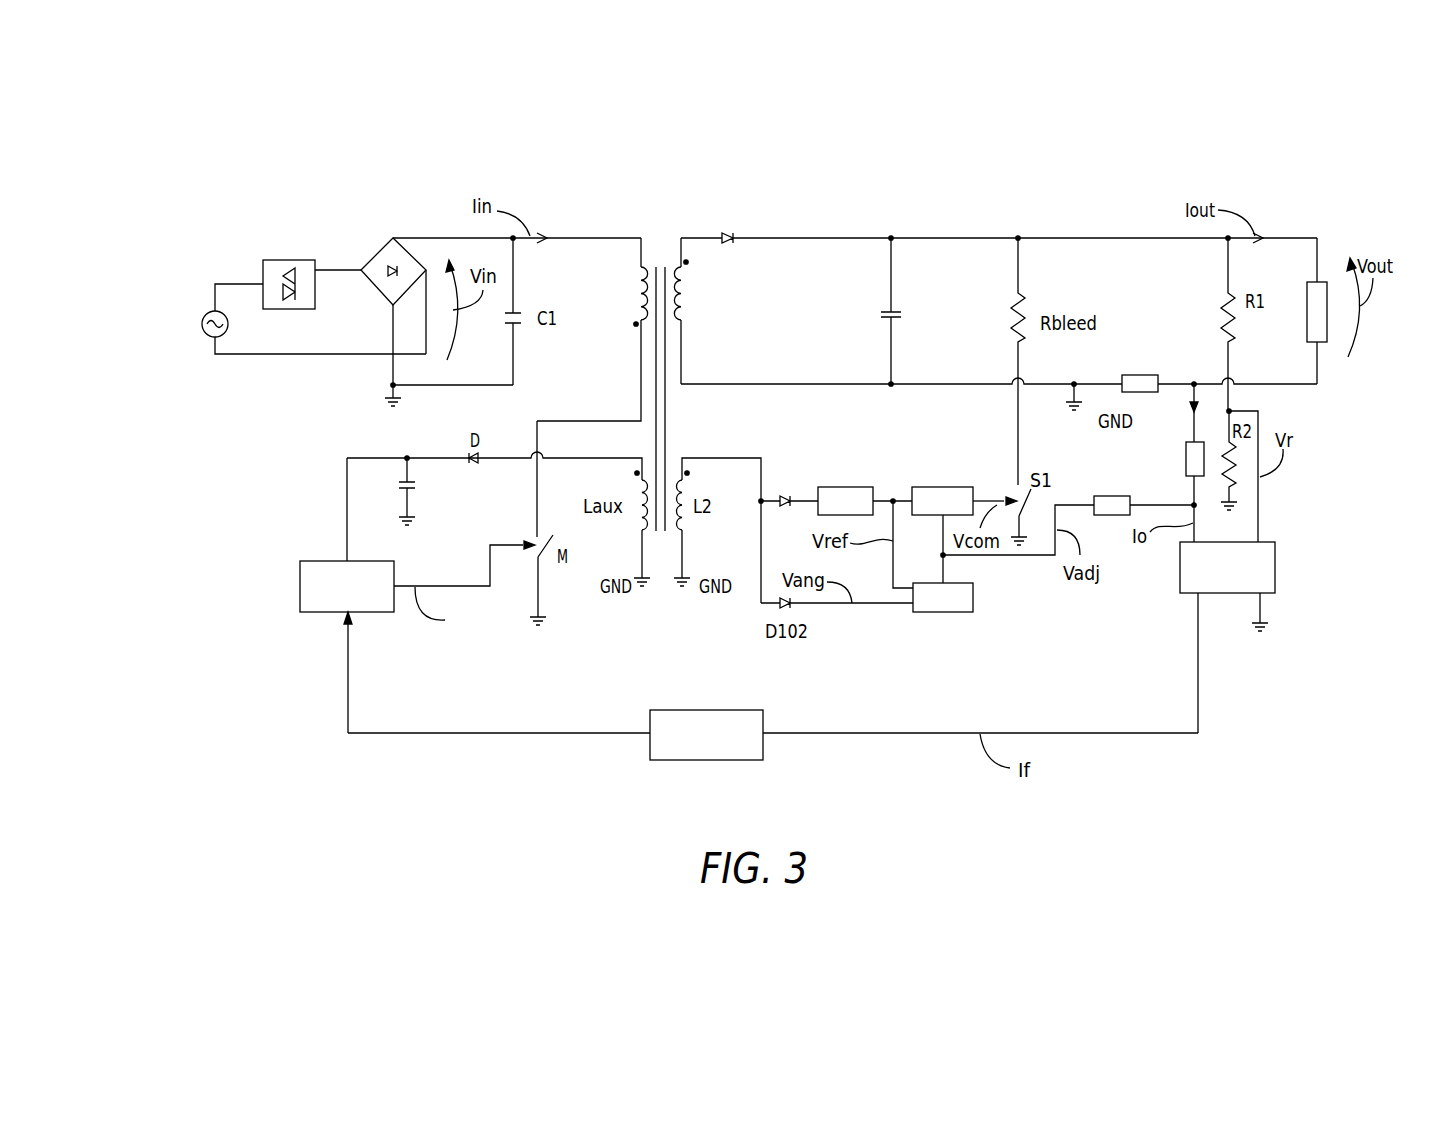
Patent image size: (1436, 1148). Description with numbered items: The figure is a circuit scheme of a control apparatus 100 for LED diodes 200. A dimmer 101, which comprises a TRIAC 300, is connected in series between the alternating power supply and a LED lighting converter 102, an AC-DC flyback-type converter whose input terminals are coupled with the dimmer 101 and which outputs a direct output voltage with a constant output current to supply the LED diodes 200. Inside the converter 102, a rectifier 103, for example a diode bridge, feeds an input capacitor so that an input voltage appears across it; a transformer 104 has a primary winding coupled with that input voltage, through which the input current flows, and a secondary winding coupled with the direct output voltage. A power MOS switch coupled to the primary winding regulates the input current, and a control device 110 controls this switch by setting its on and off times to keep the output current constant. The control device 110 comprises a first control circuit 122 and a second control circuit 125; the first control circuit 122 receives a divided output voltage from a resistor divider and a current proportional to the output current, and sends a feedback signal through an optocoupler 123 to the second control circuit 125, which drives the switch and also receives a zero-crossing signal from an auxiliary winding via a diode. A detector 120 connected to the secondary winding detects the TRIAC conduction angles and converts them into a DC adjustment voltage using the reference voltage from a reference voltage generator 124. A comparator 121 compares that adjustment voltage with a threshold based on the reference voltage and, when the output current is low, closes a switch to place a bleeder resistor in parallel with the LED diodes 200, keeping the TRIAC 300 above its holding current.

The dimmer 101 is at (262, 272).
The TRIAC 300 is at (288, 262).
The control apparatus 100 is at (376, 237).
The rectifier 103 is at (375, 288).
The LED lighting converter 102 is at (649, 229).
The transformer 104 is at (669, 229).
The control device 110 is at (405, 555).
The second control circuit 125 is at (367, 613).
The reference voltage generator 124 is at (847, 487).
The comparator 121 is at (943, 487).
The detector 120 is at (943, 612).
The first control circuit 122 is at (1275, 567).
The optocoupler 123 is at (707, 760).
The LED diodes 200 is at (1307, 312).